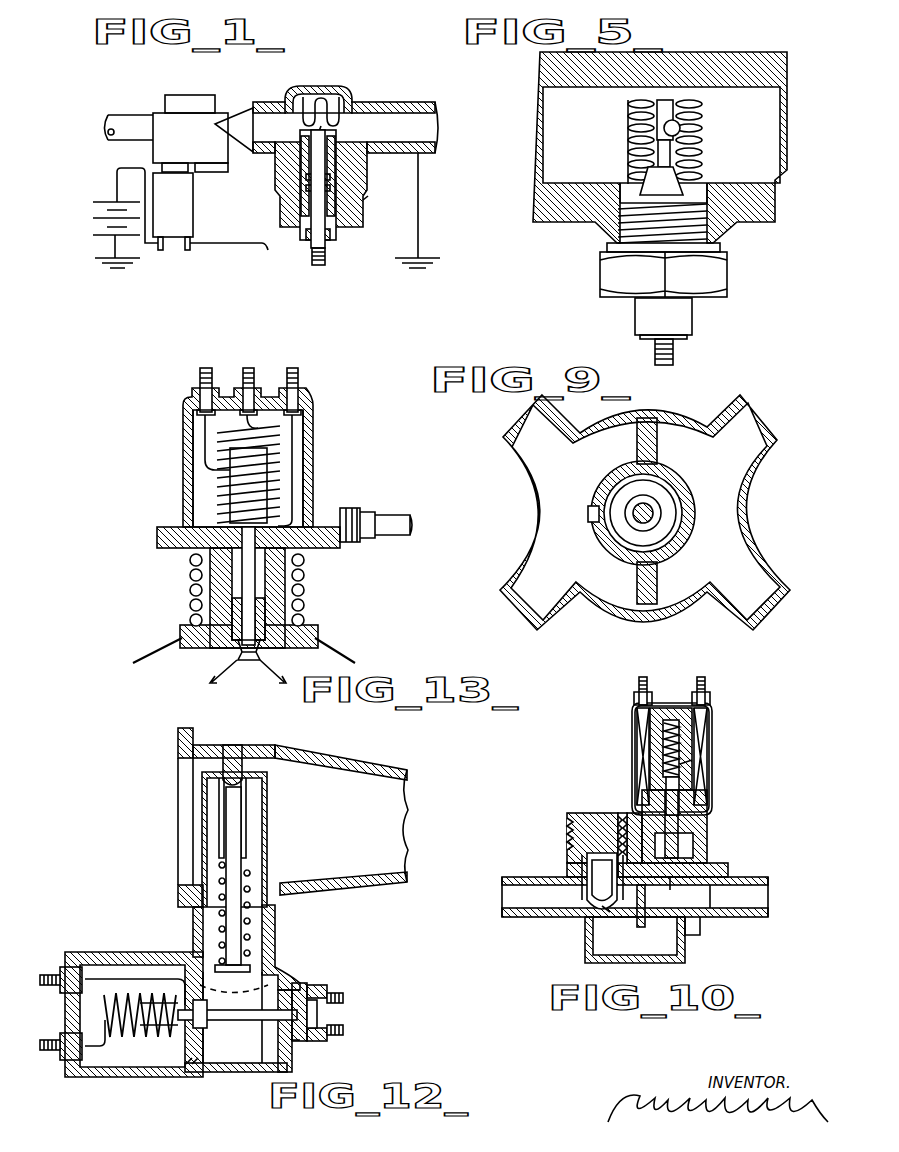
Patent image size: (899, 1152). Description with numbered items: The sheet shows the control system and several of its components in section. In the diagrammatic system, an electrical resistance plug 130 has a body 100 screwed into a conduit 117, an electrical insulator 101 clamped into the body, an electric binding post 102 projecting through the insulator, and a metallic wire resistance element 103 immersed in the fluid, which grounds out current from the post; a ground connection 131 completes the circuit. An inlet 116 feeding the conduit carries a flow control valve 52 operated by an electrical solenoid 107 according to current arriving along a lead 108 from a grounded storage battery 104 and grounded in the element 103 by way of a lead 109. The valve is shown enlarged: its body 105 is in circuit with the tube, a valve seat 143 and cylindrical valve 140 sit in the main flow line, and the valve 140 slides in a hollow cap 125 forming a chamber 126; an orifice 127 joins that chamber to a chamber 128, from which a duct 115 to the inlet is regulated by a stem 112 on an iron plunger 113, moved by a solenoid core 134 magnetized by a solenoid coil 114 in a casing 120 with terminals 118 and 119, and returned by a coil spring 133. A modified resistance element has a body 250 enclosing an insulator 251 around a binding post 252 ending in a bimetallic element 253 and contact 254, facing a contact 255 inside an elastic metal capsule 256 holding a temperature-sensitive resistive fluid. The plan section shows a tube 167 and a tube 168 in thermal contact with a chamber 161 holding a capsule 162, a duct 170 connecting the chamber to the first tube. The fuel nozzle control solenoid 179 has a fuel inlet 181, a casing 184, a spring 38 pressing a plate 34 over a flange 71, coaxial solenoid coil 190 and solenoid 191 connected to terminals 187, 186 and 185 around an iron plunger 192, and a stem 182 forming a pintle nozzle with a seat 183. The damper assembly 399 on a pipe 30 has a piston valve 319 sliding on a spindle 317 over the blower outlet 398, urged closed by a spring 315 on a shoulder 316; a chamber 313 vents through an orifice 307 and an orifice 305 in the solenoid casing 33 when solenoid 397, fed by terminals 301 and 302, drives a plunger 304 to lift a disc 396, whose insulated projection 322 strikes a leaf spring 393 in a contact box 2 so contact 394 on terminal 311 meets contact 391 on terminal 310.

In FIG. 1, the flow control valve 52 is at (184, 108).
In FIG. 10, the flow control valve 52 is at (698, 935).
In FIG. 1, the inlet 116 is at (104, 133).
In FIG. 10, the inlet 116 is at (748, 898).
In FIG. 1, the lead 108 is at (117, 176).
In FIG. 1, the electrical solenoid 107 is at (180, 210).
In FIG. 10, the electrical solenoid 107 is at (700, 740).
In FIG. 1, the grounded storage battery 104 is at (100, 228).
In FIG. 1, the lead 109 is at (268, 250).
In FIG. 1, the conduit 117 is at (380, 106).
In FIG. 10, the conduit 117 is at (535, 900).
In FIG. 1, the metallic wire electrical resistance element 103 is at (342, 92).
In FIG. 1, the body 100 is at (355, 218).
In FIG. 1, the electrical resistance plug 130 is at (360, 202).
In FIG. 1, the electrical insulator 101 is at (327, 236).
In FIG. 1, the electric binding post 102 is at (328, 260).
In FIG. 1, the ground connection 131 is at (418, 206).
In FIG. 5, the bimetallic element 253 is at (704, 120).
In FIG. 5, the electrical contact 254 is at (632, 122).
In FIG. 5, the contact 255 is at (668, 106).
In FIG. 5, the elastic metal capsule 256 is at (703, 142).
In FIG. 5, the electrical insulator 251 is at (700, 178).
In FIG. 5, the body 250 is at (716, 276).
In FIG. 5, the binding post 252 is at (676, 352).
In FIG. 9, the tube 167 is at (540, 502).
In FIG. 9, the tube 168 is at (748, 500).
In FIG. 9, the metallic elastic capsule 162 is at (668, 498).
In FIG. 9, the chamber 161 is at (680, 522).
In FIG. 9, the duct 170 is at (590, 516).
In FIG. 13, the electric fuel nozzle control solenoid 179 is at (312, 440).
In FIG. 13, the casing 184 is at (312, 445).
In FIG. 13, the terminal 187 is at (212, 380).
In FIG. 13, the terminal 186 is at (255, 384).
In FIG. 13, the terminal 185 is at (299, 381).
In FIG. 13, the solenoid coil 190 is at (280, 450).
In FIG. 13, the iron plunger 192 is at (232, 480).
In FIG. 13, the solenoid 191 is at (290, 490).
In FIG. 13, the fuel inlet 181 is at (316, 532).
In FIG. 13, the flange 71 is at (318, 633).
In FIG. 13, the spring 38 is at (306, 596).
In FIG. 13, the stem 182 is at (243, 567).
In FIG. 13, the plate 34 is at (342, 656).
In FIG. 13, the seat 183 is at (262, 650).
In FIG. 12, the pipe 30 is at (352, 772).
In FIG. 12, the blower outlet 398 is at (190, 782).
In FIG. 12, the piston valve 319 is at (268, 812).
In FIG. 12, the spindle 317 is at (243, 875).
In FIG. 12, the spring 315 is at (250, 936).
In FIG. 12, the shoulder 316 is at (248, 975).
In FIG. 12, the damper assembly 399 is at (180, 924).
In FIG. 12, the chamber 313 is at (224, 1072).
In FIG. 12, the solenoid casing 33 is at (130, 1077).
In FIG. 12, the terminal 302 is at (62, 967).
In FIG. 12, the terminal 301 is at (56, 1062).
In FIG. 12, the solenoid 397 is at (140, 992).
In FIG. 12, the plunger 304 is at (128, 1040).
In FIG. 12, the orifice 307 is at (180, 1033).
In FIG. 12, the electrically insulated projection 322 is at (285, 1022).
In FIG. 12, the disc 396 is at (208, 1008).
In FIG. 12, the orifice 305 is at (190, 1077).
In FIG. 12, the contact box 2 is at (310, 1048).
In FIG. 12, the contact 394 is at (302, 985).
In FIG. 12, the contact 391 is at (320, 988).
In FIG. 12, the terminal 310 is at (344, 999).
In FIG. 12, the leaf spring 393 is at (318, 1016).
In FIG. 12, the terminal 311 is at (344, 1034).
In FIG. 10, the body 105 is at (640, 960).
In FIG. 10, the casing 120 is at (712, 748).
In FIG. 10, the solenoid core 134 is at (684, 752).
In FIG. 10, the solenoid coil 114 is at (694, 770).
In FIG. 10, the coil spring 133 is at (681, 785).
In FIG. 10, the terminal 118 is at (650, 680).
In FIG. 10, the terminal 119 is at (708, 684).
In FIG. 10, the iron plunger 113 is at (700, 826).
In FIG. 10, the chamber 128 is at (695, 840).
In FIG. 10, the stem 112 is at (680, 850).
In FIG. 10, the duct 115 is at (700, 874).
In FIG. 10, the hollow cap 125 is at (580, 815).
In FIG. 10, the orifice 127 is at (614, 822).
In FIG. 10, the chamber 126 is at (585, 860).
In FIG. 10, the cylindrical valve 140 is at (590, 898).
In FIG. 10, the valve seat 143 is at (603, 912).